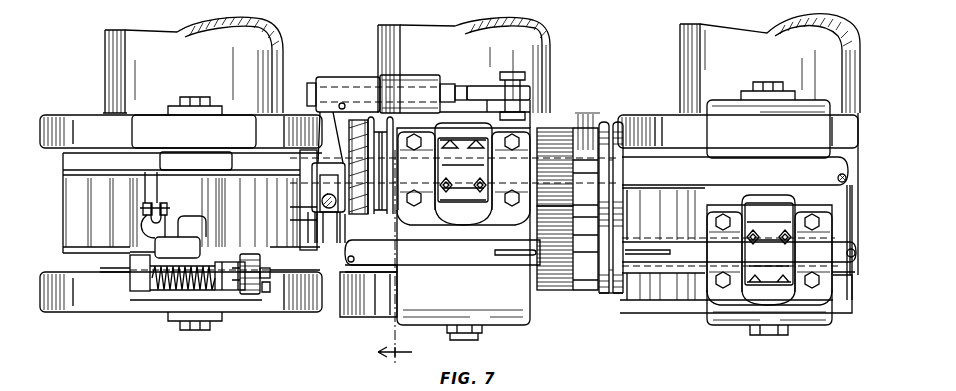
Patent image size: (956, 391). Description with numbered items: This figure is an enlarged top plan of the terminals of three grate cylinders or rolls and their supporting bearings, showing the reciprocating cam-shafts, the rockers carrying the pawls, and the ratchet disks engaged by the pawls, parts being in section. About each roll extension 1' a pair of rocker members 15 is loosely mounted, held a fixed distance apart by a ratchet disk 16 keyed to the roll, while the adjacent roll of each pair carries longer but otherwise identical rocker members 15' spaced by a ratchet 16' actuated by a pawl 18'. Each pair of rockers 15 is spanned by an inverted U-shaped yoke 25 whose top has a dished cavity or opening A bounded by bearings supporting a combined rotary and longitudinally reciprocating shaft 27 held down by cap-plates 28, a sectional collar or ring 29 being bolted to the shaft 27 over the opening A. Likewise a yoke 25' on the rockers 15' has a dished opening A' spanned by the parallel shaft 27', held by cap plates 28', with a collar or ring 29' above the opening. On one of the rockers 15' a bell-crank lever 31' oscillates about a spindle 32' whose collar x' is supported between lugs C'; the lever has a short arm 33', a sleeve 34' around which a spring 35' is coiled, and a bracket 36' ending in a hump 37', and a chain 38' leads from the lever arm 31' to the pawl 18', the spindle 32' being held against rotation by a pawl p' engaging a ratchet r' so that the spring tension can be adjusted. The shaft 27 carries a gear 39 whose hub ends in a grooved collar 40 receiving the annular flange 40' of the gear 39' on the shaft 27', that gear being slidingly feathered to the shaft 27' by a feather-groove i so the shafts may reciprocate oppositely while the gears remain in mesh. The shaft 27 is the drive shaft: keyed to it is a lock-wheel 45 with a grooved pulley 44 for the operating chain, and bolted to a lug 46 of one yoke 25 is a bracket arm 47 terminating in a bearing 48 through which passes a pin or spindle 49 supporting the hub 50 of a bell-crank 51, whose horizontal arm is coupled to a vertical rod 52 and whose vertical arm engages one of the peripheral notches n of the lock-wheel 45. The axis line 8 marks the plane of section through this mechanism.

The roll extension 1' is at (470, 60).
The rocker members 15' is at (449, 215).
The ratchet 16' is at (441, 193).
The pawl 18' is at (196, 159).
The chain 38' is at (155, 172).
The bell-crank lever 31' is at (165, 205).
The bracket 36' is at (190, 217).
The hump 37' is at (177, 247).
The short arm 33' is at (188, 296).
The spring 35' is at (177, 307).
The spindle 32' is at (224, 309).
The sleeve 34' is at (249, 257).
The collar x' is at (239, 305).
The pawl p' is at (268, 308).
The ratchet r' is at (279, 308).
The lugs C' is at (205, 276).
The shaft 27 is at (567, 160).
The rod 52 is at (330, 209).
The bell-crank 51 is at (330, 115).
The peripheral notches n is at (345, 130).
The hub 50 is at (319, 77).
The bearing 48 is at (428, 76).
The pin or spindle 49 is at (455, 85).
The lug 46 is at (522, 98).
The bracket arm 47 is at (507, 86).
The lock-wheel 45 is at (358, 140).
The grooved pulley 44 is at (382, 128).
The axis line 8 is at (395, 213).
The cap-plates 28 is at (455, 185).
The sectional collar or ring 29 is at (463, 193).
The dished cavity or opening A is at (463, 213).
The shaft 27' is at (442, 272).
The feather-groove i is at (505, 256).
The yoke 25 is at (470, 298).
The gear 39 is at (568, 187).
The gear 39' is at (555, 275).
The grooved collar 40 is at (612, 189).
The annular flange 40' is at (617, 325).
The rocker members 15 is at (599, 216).
The ratchet disk 16 is at (354, 228).
The cap plates 28' is at (755, 288).
The collar or ring 29' is at (783, 245).
The dished opening A' is at (769, 285).
The yoke 25' is at (764, 326).